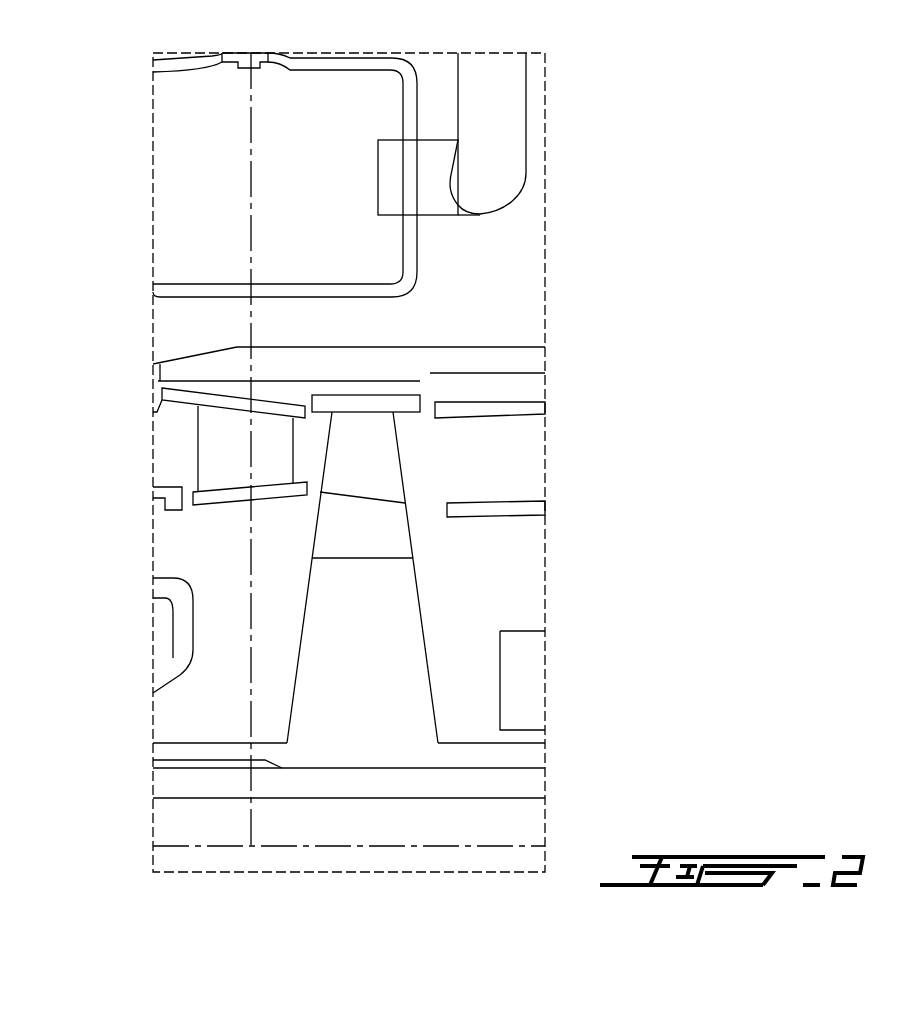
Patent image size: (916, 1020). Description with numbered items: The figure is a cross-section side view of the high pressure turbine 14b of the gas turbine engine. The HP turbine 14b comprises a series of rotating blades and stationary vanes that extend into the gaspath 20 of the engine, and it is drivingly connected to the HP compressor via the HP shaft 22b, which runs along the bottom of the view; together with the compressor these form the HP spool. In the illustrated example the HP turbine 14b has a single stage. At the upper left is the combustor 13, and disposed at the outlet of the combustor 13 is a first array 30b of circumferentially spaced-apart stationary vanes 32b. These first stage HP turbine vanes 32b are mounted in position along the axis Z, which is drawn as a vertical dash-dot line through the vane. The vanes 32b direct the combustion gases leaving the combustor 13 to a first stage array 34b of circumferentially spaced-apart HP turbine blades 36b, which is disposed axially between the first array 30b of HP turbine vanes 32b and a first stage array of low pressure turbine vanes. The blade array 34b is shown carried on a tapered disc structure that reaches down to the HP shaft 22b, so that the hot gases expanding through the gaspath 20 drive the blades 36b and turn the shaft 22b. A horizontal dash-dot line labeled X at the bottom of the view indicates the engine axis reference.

The combustor 13 is at (306, 90).
The first array of stationary vanes 30b is at (240, 373).
The stationary vane 32b is at (240, 447).
The first stage array of HP turbine blades 34b is at (397, 390).
The HP turbine blade 36b is at (378, 445).
The gaspath 20 is at (508, 475).
The high pressure turbine 14b is at (245, 683).
The HP shaft 22b is at (225, 753).
The axis Z is at (250, 155).
The X axis X is at (177, 846).